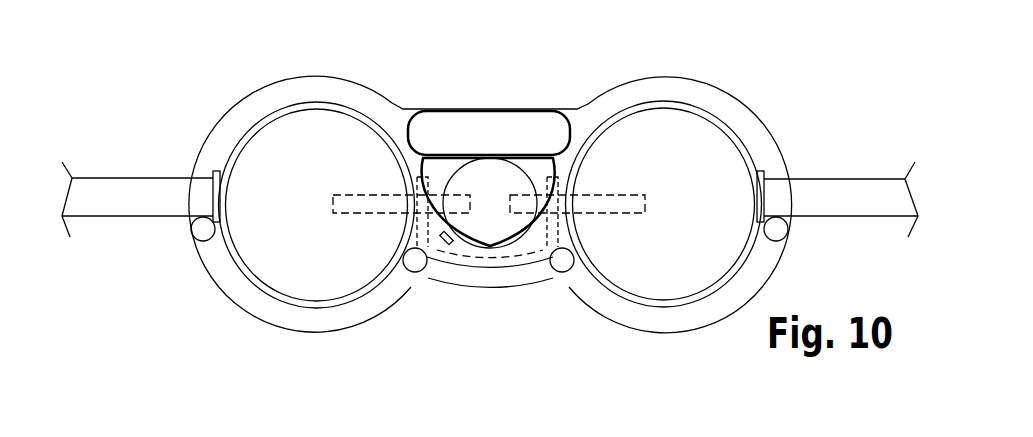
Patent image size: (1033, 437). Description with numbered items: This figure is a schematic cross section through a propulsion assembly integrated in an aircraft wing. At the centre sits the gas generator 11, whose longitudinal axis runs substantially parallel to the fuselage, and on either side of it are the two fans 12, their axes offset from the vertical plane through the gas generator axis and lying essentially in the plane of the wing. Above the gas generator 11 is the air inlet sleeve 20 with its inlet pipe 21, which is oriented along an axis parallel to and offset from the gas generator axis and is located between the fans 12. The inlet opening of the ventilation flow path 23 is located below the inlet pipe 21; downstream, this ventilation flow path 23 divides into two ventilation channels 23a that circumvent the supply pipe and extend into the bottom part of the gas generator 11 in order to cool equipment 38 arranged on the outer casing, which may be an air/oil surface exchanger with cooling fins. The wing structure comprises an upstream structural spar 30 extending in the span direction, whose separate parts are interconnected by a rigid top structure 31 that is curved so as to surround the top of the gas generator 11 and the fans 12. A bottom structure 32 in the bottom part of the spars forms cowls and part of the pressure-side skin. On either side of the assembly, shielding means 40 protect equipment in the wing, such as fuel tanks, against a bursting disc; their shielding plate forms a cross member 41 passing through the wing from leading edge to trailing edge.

The gas generator 11 is at (490, 180).
The fans 12 is at (703, 153).
The air inlet sleeve 20 is at (537, 113).
The inlet pipe 21 is at (518, 108).
The ventilation flow path 23 is at (442, 157).
The ventilation channels 23a is at (508, 262).
The upstream structural spar 30 is at (113, 178).
The top structure 31 is at (666, 78).
The bottom structure 32 is at (530, 292).
The equipment 38 is at (443, 251).
The shielding means 40 is at (774, 171).
The cross member 41 is at (213, 196).